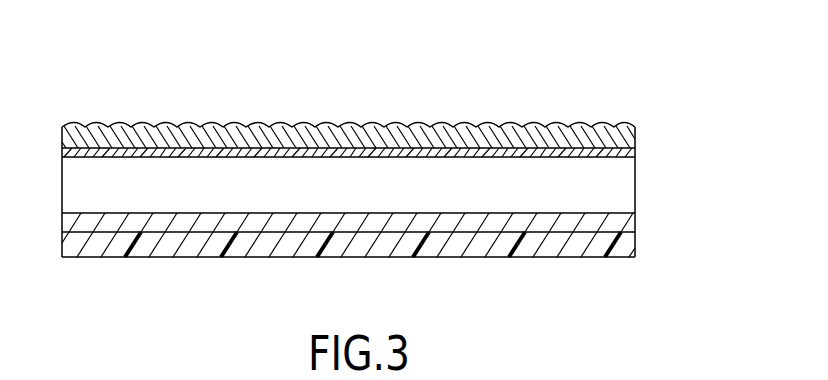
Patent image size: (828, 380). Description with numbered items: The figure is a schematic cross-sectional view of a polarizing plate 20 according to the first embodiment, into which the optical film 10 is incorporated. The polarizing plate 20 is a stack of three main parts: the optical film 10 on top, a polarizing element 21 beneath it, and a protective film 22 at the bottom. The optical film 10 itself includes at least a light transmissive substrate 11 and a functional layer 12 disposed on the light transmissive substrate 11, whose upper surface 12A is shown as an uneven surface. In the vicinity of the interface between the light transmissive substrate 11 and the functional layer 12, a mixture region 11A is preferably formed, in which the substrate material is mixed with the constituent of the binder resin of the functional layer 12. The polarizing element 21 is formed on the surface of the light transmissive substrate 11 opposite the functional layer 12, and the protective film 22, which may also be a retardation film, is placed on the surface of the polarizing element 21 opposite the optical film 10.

The optical film 10 is at (48, 125).
The light transmissive substrate 11 is at (620, 187).
The mixture region 11A is at (635, 152).
The functional layer 12 is at (635, 128).
The uneven surface of hard coat layer 12A is at (538, 125).
The polarizing plate 20 is at (382, 88).
The polarizing element 21 is at (624, 225).
The protective film 22 is at (630, 250).